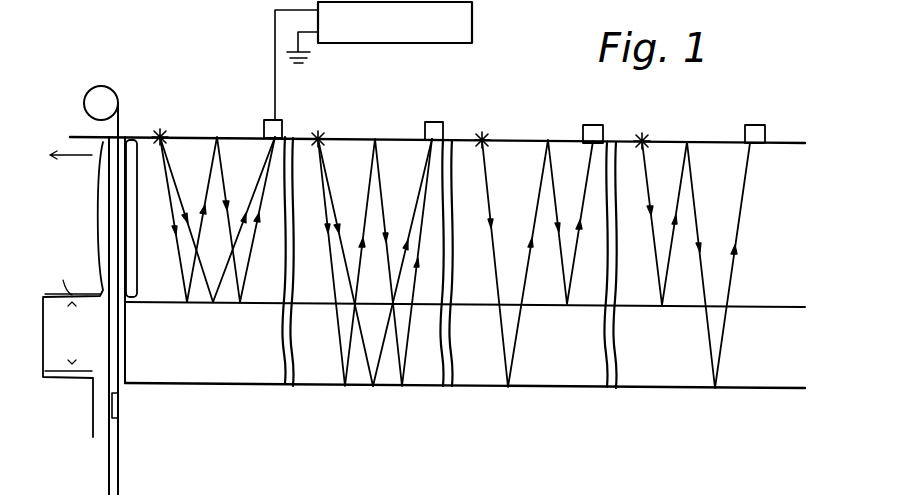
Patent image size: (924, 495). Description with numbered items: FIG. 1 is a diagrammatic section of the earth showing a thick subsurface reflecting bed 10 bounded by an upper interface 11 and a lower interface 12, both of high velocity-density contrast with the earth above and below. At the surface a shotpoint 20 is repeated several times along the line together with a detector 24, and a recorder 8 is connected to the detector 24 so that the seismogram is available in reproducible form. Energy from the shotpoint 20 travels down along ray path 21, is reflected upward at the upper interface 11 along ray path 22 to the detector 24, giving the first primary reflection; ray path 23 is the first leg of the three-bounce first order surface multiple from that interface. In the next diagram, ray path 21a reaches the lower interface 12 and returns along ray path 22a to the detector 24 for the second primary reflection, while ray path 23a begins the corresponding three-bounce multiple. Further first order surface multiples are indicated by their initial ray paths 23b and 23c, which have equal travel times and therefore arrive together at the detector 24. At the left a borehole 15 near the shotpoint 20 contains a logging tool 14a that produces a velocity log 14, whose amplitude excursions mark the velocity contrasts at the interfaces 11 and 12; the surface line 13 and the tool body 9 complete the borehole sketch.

The recorder 8 is at (437, 38).
The acoustic logging tool 9 is at (137, 223).
The subsurface reflecting bed 10 is at (205, 370).
The upper interface 11 is at (160, 301).
The lower interface 12 is at (272, 385).
The earth surface with borehole and pulley 13 is at (138, 135).
The velocity log 14 is at (100, 220).
The logging tool 14a is at (118, 408).
The borehole 15 is at (122, 470).
The shotpoint 20 is at (161, 135).
The ray path 21 is at (180, 187).
The ray path 21a is at (335, 202).
The ray path 22 is at (258, 183).
The ray path 22a is at (418, 195).
The ray path 23 is at (182, 272).
The ray path 23a is at (332, 275).
The ray path 23b is at (497, 275).
The ray path 23c is at (655, 267).
The detector 24 is at (277, 125).